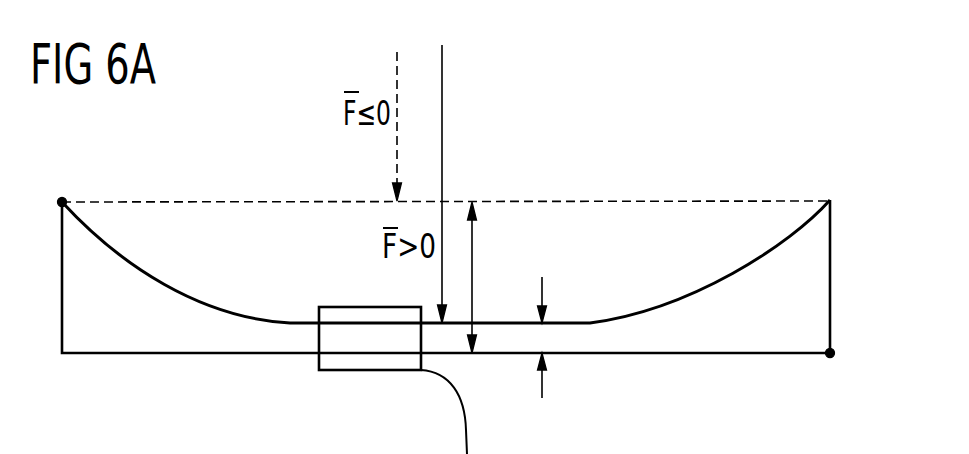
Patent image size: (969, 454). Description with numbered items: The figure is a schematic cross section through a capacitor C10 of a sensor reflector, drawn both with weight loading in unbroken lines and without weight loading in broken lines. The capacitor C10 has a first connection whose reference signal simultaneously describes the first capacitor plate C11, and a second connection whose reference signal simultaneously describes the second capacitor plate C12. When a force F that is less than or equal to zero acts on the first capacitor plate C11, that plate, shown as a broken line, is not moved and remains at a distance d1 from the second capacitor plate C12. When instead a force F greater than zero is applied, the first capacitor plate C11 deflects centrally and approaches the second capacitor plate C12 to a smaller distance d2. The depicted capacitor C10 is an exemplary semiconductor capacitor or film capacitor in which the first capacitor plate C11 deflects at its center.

The capacitor C10 is at (650, 200).
The first capacitor plate C11 is at (62, 198).
The second capacitor plate C12 is at (830, 358).
The distance d1 is at (487, 277).
The distance d2 is at (544, 335).